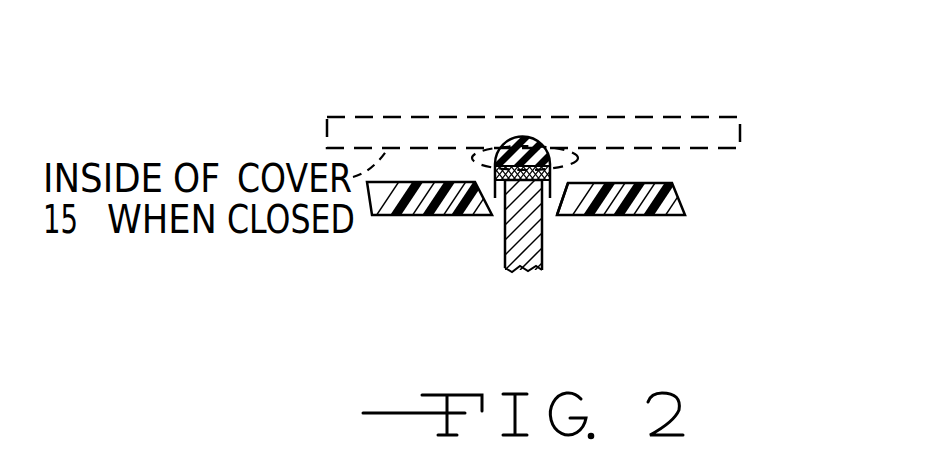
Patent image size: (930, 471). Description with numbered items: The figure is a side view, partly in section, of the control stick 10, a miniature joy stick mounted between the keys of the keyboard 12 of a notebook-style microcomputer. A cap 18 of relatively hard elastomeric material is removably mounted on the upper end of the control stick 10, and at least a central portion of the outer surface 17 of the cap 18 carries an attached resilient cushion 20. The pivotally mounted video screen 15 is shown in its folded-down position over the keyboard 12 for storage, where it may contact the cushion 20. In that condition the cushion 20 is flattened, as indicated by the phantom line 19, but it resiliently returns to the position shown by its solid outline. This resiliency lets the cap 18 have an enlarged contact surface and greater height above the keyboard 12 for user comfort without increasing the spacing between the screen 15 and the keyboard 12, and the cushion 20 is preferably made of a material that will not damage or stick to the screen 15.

The control stick 10 is at (485, 242).
The keyboard 12 is at (680, 198).
The video screen 15 is at (350, 117).
The outer surface 17 is at (547, 143).
The cap 18 is at (577, 212).
The phantom line 19 is at (578, 148).
The cushion 20 is at (503, 140).